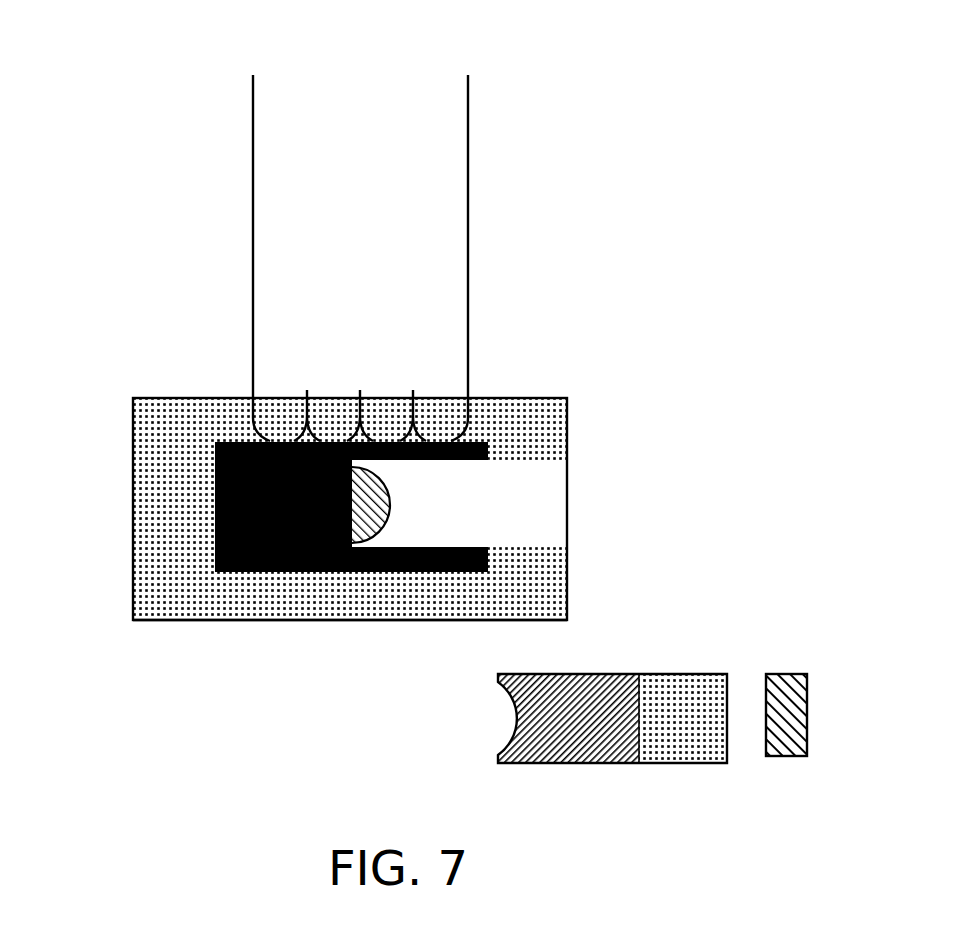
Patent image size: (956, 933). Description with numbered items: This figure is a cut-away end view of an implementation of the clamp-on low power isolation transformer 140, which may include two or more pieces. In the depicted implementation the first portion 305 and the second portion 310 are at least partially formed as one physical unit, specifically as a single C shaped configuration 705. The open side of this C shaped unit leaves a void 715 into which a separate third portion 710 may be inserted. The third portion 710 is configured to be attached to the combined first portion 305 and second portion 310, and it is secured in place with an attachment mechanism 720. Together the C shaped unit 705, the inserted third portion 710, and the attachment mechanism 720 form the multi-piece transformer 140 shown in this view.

The transformer 140 is at (358, 94).
The first portion 305 is at (165, 398).
The second portion 310 is at (205, 622).
The C shaped configuration 705 is at (292, 512).
The void 715 is at (545, 500).
The third portion 710 is at (637, 674).
The attachment mechanism 720 is at (785, 674).